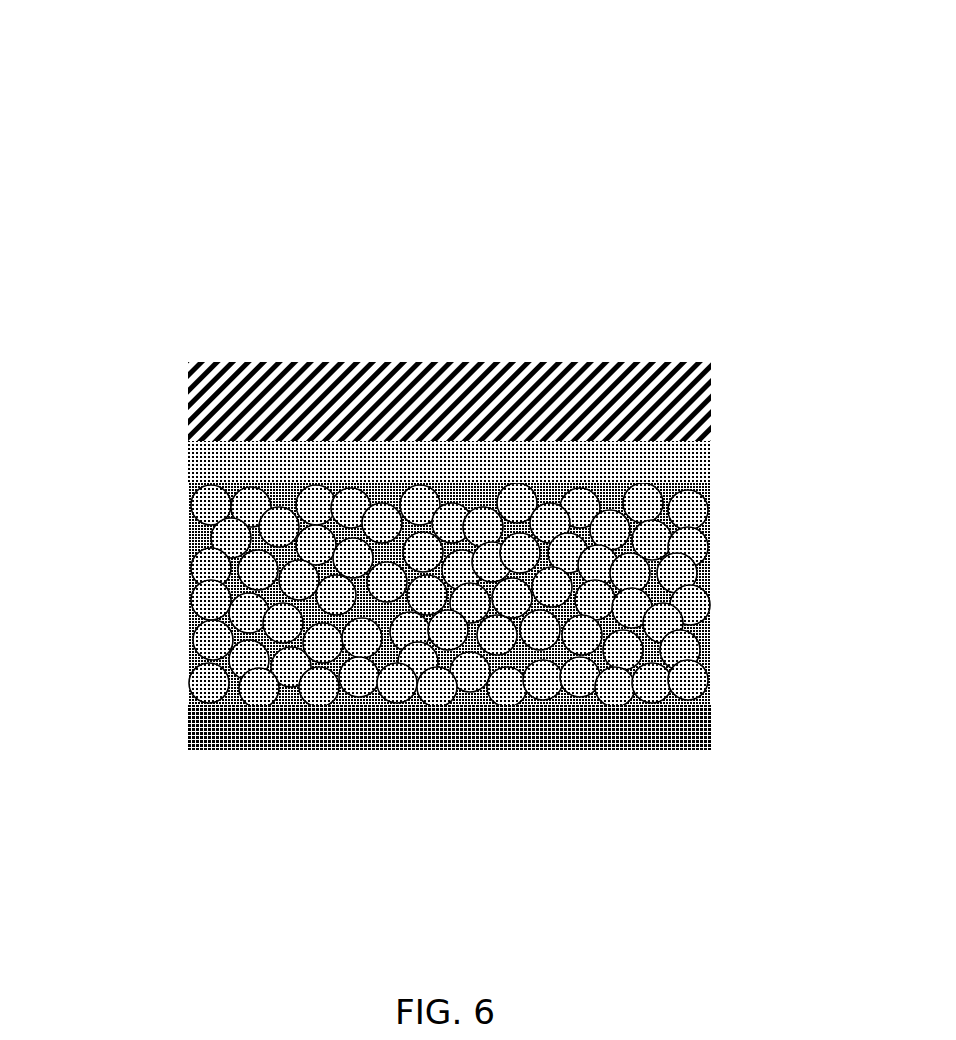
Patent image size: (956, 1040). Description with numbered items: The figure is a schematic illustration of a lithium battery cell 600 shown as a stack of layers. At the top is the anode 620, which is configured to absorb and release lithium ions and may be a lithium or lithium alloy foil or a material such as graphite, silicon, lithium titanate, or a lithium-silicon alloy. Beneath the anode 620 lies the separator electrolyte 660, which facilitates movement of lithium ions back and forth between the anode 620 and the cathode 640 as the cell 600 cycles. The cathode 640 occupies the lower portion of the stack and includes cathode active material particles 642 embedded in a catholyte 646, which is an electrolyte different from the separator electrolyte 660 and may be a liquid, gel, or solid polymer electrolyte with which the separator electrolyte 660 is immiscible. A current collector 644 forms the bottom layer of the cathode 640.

The lithium battery cell 600 is at (260, 253).
The anode 620 is at (230, 390).
The separator electrolyte 660 is at (683, 468).
The cathode 640 is at (178, 488).
The cathode active material particles 642 is at (500, 589).
The current collector 644 is at (228, 730).
The catholyte 646 is at (698, 575).